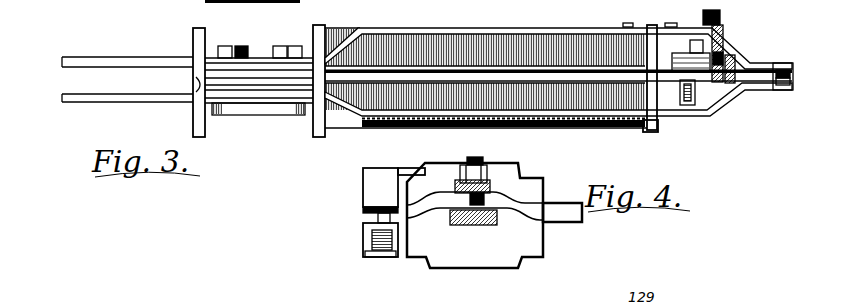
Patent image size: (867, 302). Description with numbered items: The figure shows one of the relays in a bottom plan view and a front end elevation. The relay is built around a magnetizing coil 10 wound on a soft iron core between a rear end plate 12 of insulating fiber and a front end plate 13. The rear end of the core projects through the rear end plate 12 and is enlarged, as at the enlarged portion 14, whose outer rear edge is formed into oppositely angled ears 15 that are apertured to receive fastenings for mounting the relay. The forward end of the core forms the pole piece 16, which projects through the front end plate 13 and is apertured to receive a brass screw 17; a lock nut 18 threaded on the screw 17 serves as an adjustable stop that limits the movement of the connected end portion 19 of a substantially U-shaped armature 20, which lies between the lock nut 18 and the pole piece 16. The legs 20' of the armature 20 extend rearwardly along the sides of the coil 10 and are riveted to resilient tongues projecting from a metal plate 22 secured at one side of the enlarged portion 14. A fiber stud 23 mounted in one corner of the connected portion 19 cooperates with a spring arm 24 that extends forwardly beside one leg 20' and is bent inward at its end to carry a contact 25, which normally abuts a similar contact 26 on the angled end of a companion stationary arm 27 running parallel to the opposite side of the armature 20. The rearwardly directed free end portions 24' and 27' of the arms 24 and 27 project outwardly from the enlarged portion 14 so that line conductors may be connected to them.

In FIG. 3, the magnetizing coil 10 is at (395, 50).
In FIG. 3, the rear end plate 12 is at (319, 30).
In FIG. 3, the front end plate 13 is at (656, 132).
In FIG. 4, the front end plate 13 is at (468, 260).
In FIG. 3, the enlarged portion of core 14 is at (250, 75).
In FIG. 3, the oppositely angled ears 15 is at (197, 37).
In FIG. 3, the pole piece 16 is at (737, 68).
In FIG. 4, the pole piece 16 is at (490, 227).
In FIG. 3, the brass screw 17 is at (719, 20).
In FIG. 4, the brass screw 17 is at (467, 158).
In FIG. 3, the lock nut 18 is at (728, 37).
In FIG. 4, the lock nut 18 is at (486, 195).
In FIG. 3, the connected end portion of armature 19 is at (690, 38).
In FIG. 4, the connected end portion of armature 19 is at (515, 202).
In FIG. 4, the armature 20 is at (569, 223).
In FIG. 3, the legs of armature 20' is at (558, 41).
In FIG. 3, the metal plate 22 is at (292, 83).
In FIG. 3, the fiber stud 23 is at (697, 107).
In FIG. 4, the fiber stud 23 is at (372, 257).
In FIG. 3, the spring arm 24 is at (558, 115).
In FIG. 4, the spring arm 24 is at (346, 241).
In FIG. 3, the rearwardly directed free end portion of spring arm 24' is at (187, 107).
In FIG. 3, the contact 25 is at (792, 81).
In FIG. 4, the contact 25 is at (374, 237).
In FIG. 3, the contact 26 is at (788, 72).
In FIG. 4, the contact 26 is at (380, 209).
In FIG. 3, the stationary arm 27 is at (558, 34).
In FIG. 4, the stationary arm 27 is at (374, 190).
In FIG. 3, the rearwardly directed free end portion of stationary arm 27' is at (187, 52).